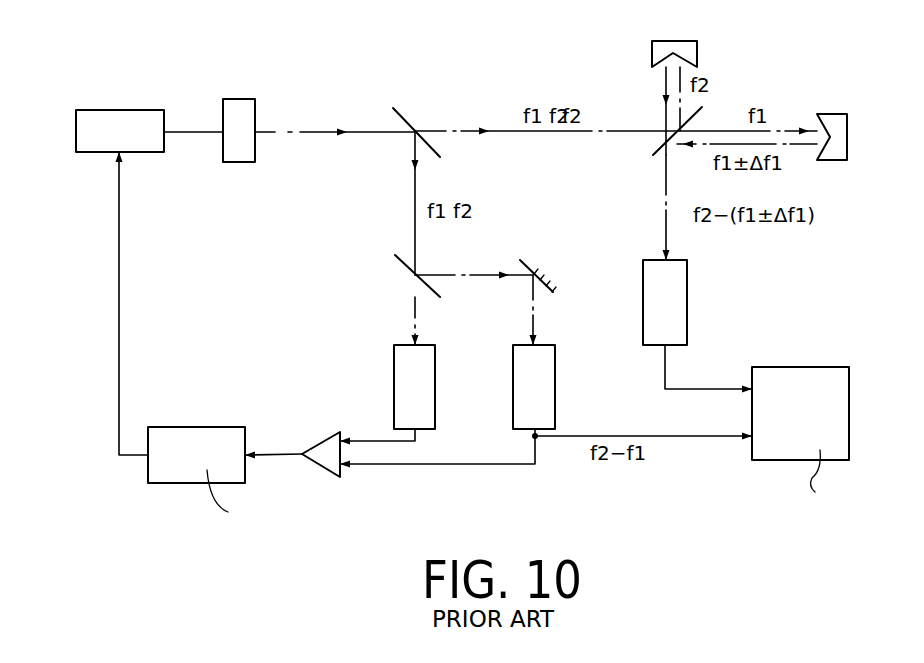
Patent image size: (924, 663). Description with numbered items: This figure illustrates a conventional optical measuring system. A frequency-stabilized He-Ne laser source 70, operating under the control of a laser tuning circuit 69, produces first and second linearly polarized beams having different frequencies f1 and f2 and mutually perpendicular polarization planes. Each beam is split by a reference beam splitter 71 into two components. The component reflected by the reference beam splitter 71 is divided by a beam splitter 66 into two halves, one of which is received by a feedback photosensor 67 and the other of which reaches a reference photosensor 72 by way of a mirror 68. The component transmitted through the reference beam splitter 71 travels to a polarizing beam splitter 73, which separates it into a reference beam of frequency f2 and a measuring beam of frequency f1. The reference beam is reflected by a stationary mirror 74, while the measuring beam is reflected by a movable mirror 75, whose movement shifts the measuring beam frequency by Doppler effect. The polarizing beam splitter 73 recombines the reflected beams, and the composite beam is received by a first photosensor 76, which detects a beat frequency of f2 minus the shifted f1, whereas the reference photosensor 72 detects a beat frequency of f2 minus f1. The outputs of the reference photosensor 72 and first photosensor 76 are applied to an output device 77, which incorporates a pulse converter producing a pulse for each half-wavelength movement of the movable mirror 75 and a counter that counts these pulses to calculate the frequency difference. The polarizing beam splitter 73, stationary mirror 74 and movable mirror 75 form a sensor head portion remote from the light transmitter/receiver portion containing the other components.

The He-Ne laser source 70 is at (119, 97).
The reference beam splitter 71 is at (405, 118).
The beam splitter 66 is at (398, 258).
The mirror 68 is at (522, 265).
The feedback photosensor 67 is at (403, 363).
The reference photosensor 72 is at (543, 385).
The laser tuning circuit 69 is at (225, 427).
The polarizing beam splitter 73 is at (660, 150).
The stationary mirror 74 is at (692, 52).
The movable mirror 75 is at (847, 150).
The first photosensor 76 is at (673, 295).
The output device 77 is at (835, 385).